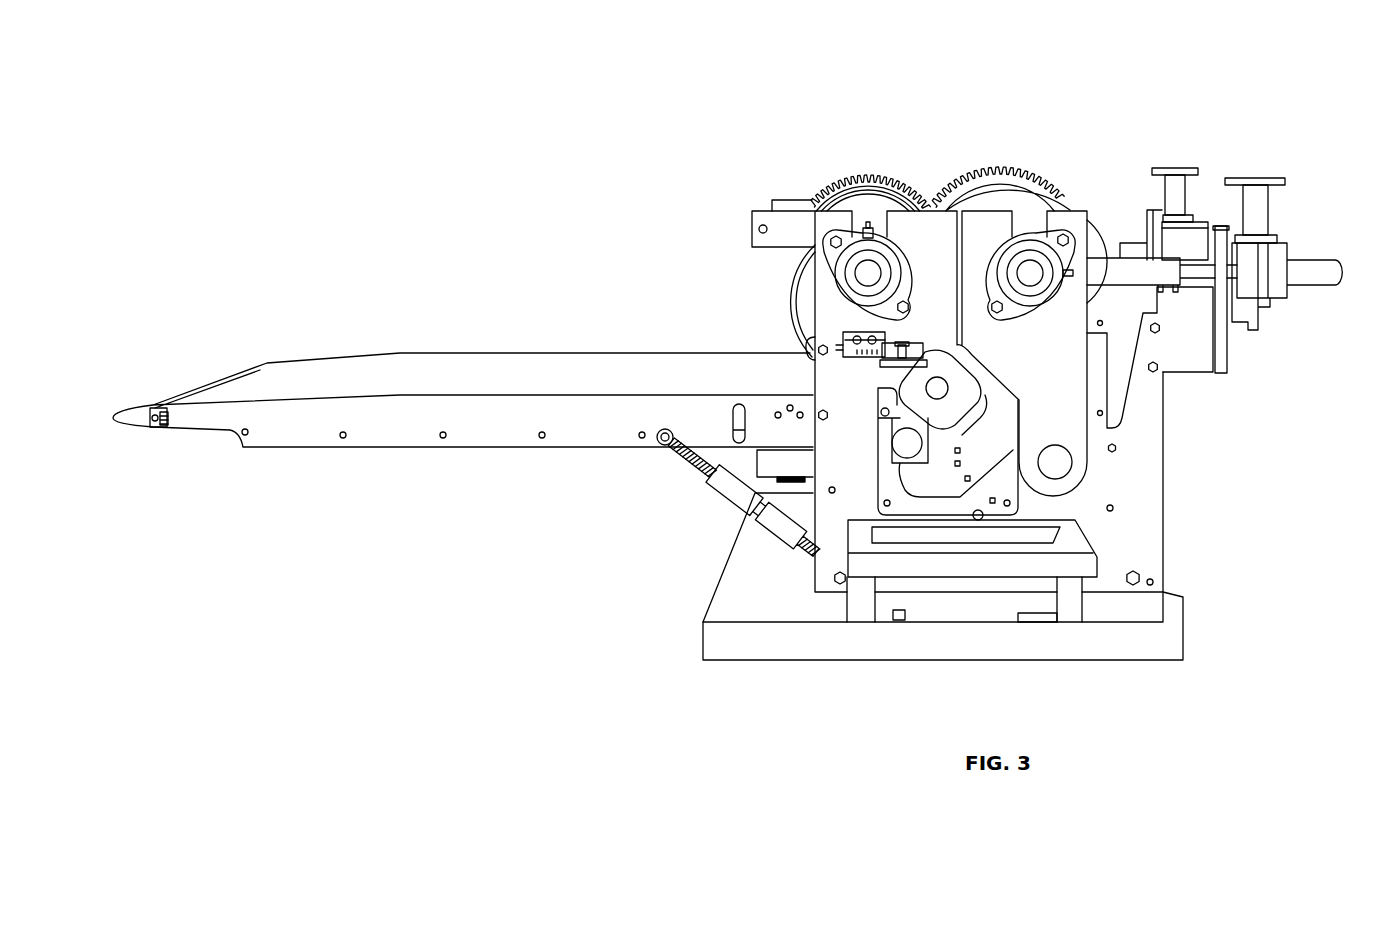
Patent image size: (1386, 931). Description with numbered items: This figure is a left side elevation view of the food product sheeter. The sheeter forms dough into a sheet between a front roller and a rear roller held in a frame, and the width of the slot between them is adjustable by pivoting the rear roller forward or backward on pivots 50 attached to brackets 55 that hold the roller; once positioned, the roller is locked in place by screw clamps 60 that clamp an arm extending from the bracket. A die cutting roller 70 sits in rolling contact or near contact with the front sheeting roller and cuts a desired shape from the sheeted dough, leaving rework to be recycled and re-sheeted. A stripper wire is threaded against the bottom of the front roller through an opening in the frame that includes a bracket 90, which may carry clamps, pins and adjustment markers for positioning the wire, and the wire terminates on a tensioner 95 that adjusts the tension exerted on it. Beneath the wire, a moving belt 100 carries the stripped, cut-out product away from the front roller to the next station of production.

The pivots 50 is at (1056, 472).
The brackets 55 is at (1050, 334).
The screw clamps 60 is at (1250, 157).
The die cutting roller 70 is at (957, 390).
The bracket 90 is at (833, 331).
The tensioner 95 is at (870, 374).
The moving belt 100 is at (413, 368).